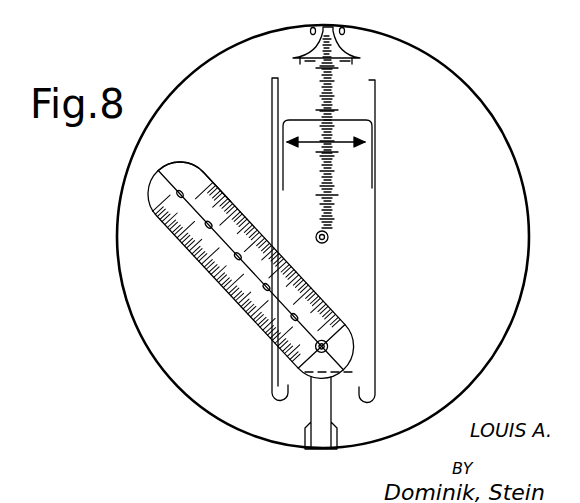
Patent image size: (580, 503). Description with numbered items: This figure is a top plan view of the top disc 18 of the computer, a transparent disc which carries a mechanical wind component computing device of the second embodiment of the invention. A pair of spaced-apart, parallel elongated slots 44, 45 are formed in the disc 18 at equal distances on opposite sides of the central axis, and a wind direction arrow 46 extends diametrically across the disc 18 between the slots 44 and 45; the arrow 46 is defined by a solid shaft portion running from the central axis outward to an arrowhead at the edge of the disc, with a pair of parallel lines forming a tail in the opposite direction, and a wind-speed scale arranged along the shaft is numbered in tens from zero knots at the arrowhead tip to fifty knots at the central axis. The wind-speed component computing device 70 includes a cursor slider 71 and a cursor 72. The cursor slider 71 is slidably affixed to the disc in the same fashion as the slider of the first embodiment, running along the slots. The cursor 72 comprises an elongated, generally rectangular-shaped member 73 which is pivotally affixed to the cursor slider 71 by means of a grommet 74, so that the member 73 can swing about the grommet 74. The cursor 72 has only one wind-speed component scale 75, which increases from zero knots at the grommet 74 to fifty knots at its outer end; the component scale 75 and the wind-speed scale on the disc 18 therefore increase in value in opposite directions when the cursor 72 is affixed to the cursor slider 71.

The disc 18 is at (477, 97).
The elongated slot 44 is at (374, 152).
The elongated slot 45 is at (270, 103).
The wind direction arrow 46 is at (350, 57).
The wind-speed component computing device 70 is at (216, 287).
The cursor slider 71 is at (362, 230).
The cursor 72 is at (178, 165).
The elongated generally rectangular-shaped member 73 is at (196, 168).
The grommet 74 is at (328, 346).
The wind-speed component scale 75 is at (160, 200).